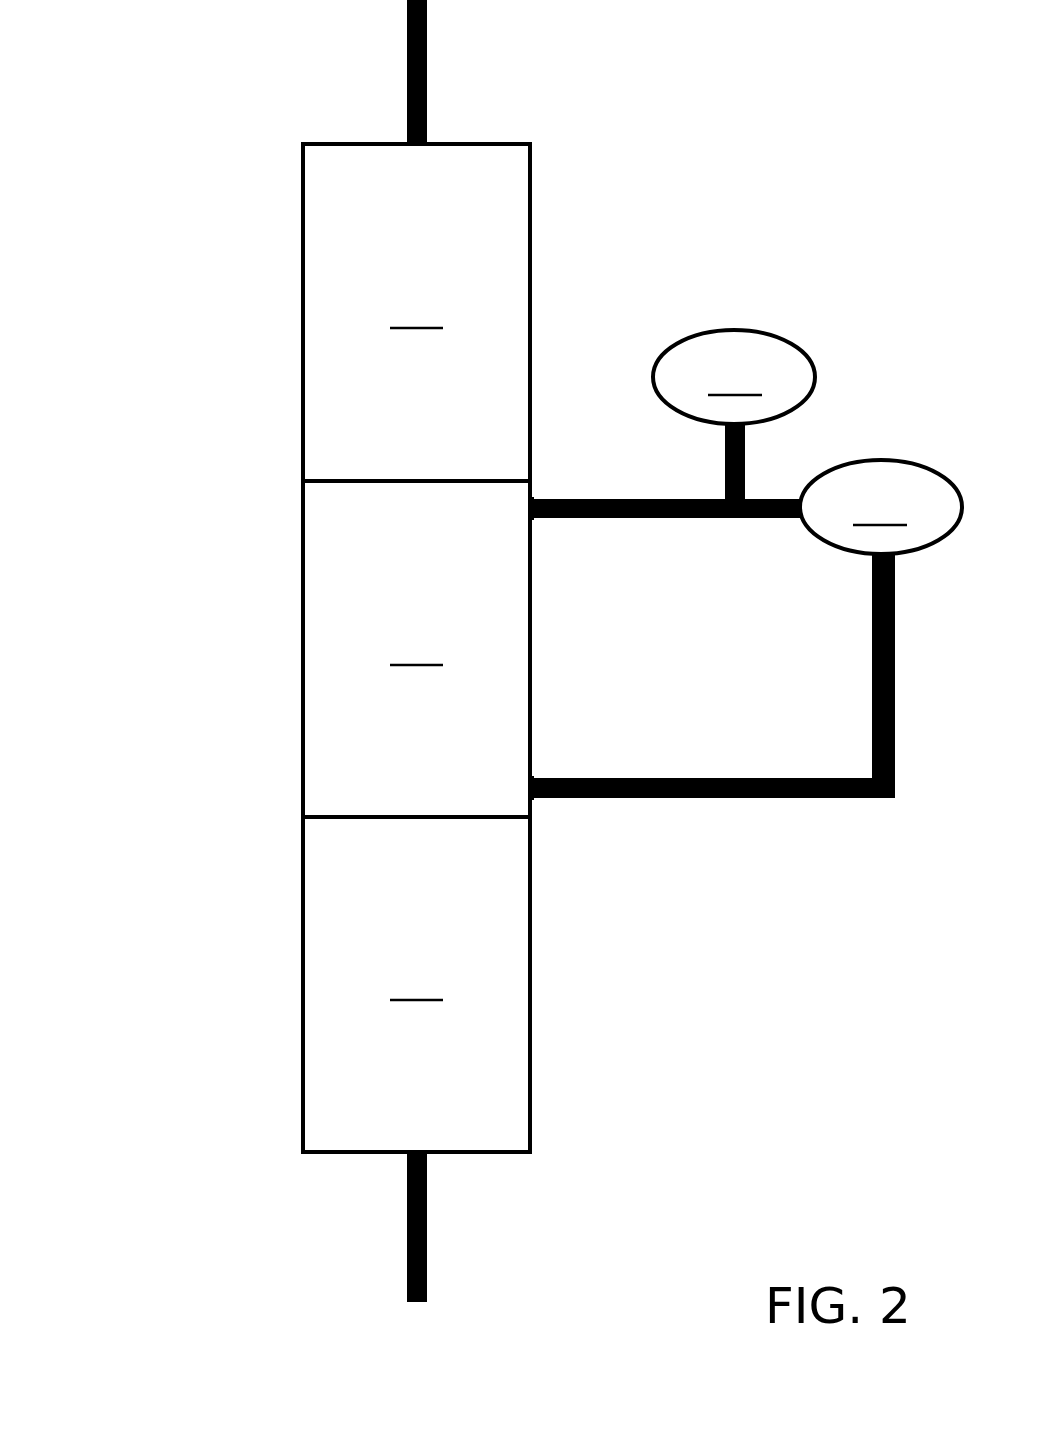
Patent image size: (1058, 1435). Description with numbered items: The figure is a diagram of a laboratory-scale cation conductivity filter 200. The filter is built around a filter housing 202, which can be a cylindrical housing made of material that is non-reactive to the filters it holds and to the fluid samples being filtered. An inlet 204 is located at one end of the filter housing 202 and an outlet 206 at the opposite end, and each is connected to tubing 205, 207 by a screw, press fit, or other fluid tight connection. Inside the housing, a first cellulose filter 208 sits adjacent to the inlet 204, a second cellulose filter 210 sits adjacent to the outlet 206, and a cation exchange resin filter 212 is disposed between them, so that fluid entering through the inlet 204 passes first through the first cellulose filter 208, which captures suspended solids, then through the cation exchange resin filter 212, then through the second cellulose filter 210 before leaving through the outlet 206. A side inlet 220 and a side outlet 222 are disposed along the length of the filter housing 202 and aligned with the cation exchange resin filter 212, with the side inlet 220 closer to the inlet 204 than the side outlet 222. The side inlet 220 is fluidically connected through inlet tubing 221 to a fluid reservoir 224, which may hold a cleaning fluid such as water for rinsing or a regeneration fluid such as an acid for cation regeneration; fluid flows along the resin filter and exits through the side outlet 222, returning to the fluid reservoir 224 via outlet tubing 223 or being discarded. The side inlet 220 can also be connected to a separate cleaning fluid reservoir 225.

The cation conductivity filter 200 is at (197, 268).
The filter housing 202 is at (520, 265).
The inlet 204 is at (428, 177).
The tubing 205 is at (428, 70).
The outlet 206 is at (473, 1132).
The tubing 207 is at (427, 1245).
The first cellulose filter 208 is at (416, 313).
The second cellulose filter 210 is at (416, 909).
The cation exchange resin filter 212 is at (416, 574).
The side inlet 220 is at (530, 500).
The inlet tubing 221 is at (642, 520).
The side outlet 222 is at (530, 778).
The outlet tubing 223 is at (667, 798).
The fluid reservoir 224 is at (881, 507).
The cleaning fluid reservoir 225 is at (734, 377).